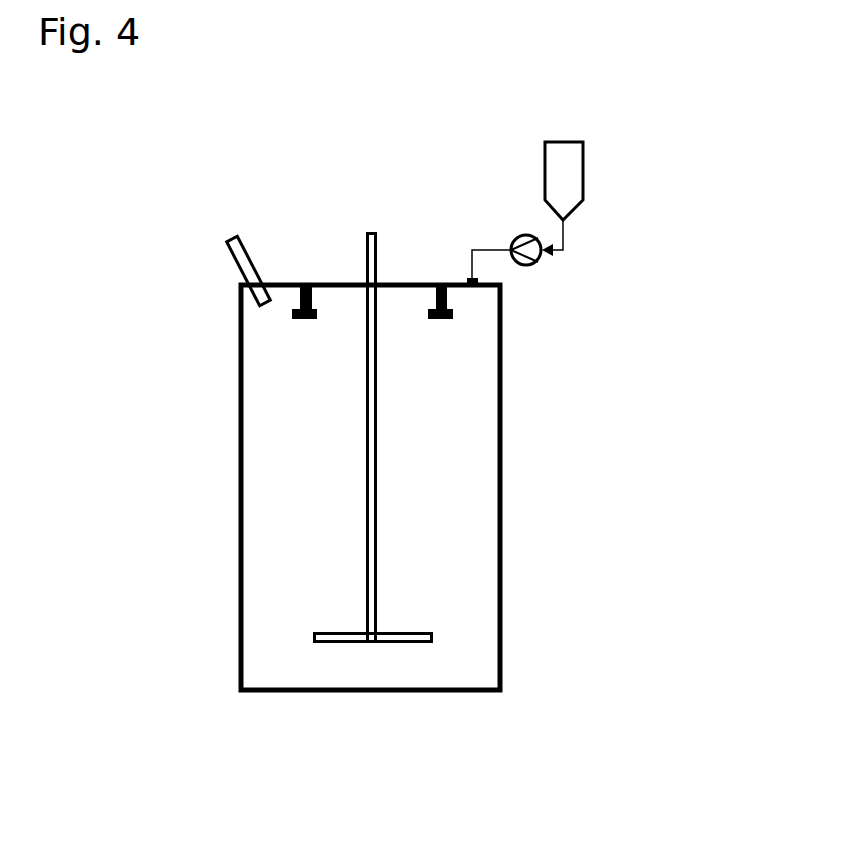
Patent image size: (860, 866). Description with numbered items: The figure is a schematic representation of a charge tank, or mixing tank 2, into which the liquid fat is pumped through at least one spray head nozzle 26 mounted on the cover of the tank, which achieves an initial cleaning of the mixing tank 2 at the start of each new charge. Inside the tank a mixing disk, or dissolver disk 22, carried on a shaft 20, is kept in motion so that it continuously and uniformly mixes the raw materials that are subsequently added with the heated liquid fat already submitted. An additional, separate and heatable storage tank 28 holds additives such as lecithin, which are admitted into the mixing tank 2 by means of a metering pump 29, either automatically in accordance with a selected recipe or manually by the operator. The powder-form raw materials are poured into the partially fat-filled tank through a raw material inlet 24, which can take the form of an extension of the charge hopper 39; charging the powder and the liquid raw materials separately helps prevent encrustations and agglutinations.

The mixing tank 2 is at (226, 796).
The stirrer shaft 20 is at (366, 518).
The dissolver disk 22 is at (313, 643).
The raw material inlet 24 is at (193, 256).
The charge hopper 39 is at (227, 243).
The spray head nozzle 26 is at (310, 287).
The storage tank 28 is at (583, 152).
The metering pump 29 is at (517, 236).